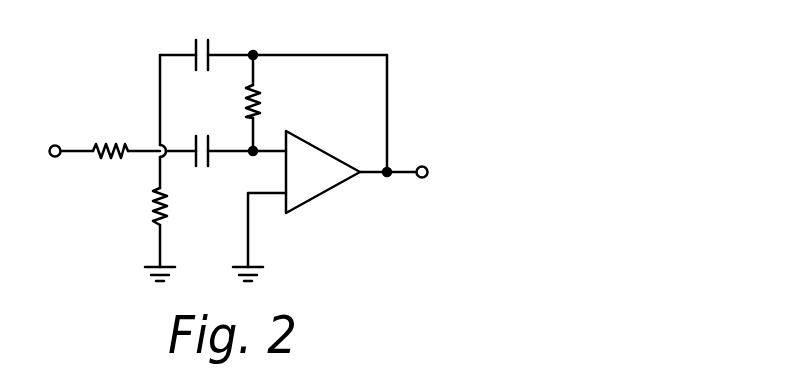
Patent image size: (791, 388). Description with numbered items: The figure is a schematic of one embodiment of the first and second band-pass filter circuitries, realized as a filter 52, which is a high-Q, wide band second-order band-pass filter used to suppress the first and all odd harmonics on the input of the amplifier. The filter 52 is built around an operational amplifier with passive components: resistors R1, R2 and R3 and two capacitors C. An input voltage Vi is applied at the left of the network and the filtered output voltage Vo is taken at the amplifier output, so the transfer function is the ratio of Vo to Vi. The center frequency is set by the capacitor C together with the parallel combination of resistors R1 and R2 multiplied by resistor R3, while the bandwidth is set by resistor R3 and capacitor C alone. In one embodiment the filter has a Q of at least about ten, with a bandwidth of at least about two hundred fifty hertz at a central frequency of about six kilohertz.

The filter 52 is at (272, 140).
The resistor R1 is at (110, 135).
The resistor R2 is at (141, 206).
The resistor R3 is at (273, 101).
The capacitor C is at (201, 89).
The input voltage Vi is at (54, 150).
The output voltage Vo is at (423, 173).